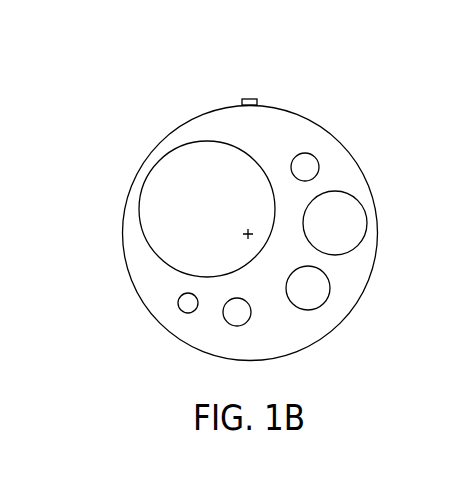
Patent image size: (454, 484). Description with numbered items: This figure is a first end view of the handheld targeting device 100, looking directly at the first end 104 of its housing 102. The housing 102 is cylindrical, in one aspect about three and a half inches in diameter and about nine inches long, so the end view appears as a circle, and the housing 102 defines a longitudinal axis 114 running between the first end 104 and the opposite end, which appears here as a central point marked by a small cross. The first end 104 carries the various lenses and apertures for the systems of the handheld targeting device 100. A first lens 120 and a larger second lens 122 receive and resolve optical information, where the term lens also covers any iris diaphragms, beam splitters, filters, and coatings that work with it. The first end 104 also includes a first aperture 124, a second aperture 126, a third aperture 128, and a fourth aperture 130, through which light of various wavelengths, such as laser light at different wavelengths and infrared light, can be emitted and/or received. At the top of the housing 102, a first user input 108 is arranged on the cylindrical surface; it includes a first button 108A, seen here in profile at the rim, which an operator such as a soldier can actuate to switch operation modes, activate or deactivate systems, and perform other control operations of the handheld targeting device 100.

The handheld targeting device 100 is at (269, 202).
The housing 102 is at (303, 117).
The first end 104 is at (308, 135).
The first user input 108 is at (245, 93).
The first button 108A is at (256, 100).
The longitudinal axis 114 is at (247, 232).
The first lens 120 is at (307, 167).
The second lens 122 is at (210, 150).
The first aperture 124 is at (229, 315).
The second aperture 126 is at (353, 238).
The third aperture 128 is at (183, 303).
The fourth aperture 130 is at (317, 301).